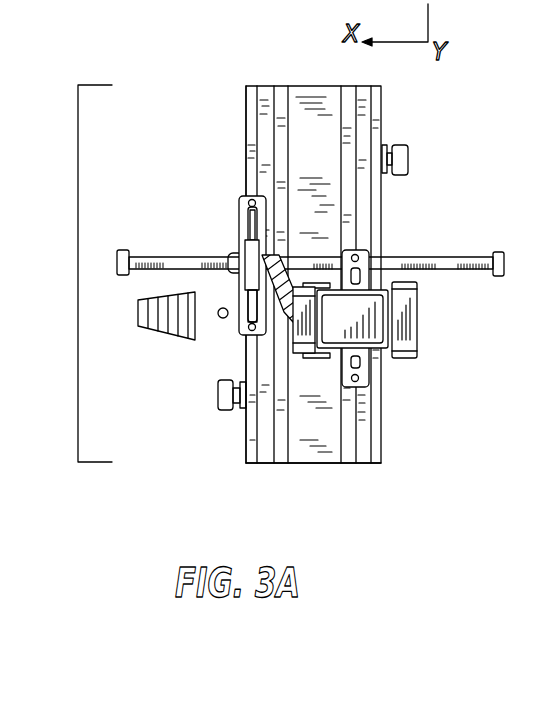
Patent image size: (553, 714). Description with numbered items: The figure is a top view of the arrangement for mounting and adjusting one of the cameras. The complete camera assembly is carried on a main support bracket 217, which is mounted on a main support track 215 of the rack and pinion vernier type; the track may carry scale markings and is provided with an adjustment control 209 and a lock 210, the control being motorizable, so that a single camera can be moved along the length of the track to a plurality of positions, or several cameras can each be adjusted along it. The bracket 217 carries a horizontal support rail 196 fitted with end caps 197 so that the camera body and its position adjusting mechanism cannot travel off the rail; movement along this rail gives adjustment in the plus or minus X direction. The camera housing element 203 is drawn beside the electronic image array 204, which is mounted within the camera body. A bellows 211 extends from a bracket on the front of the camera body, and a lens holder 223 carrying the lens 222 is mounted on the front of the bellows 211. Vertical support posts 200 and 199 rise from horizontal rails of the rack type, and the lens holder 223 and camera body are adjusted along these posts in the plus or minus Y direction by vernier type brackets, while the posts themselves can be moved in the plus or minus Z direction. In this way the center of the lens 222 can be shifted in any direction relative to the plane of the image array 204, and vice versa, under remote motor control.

The horizontal support rail 196 is at (462, 257).
The end caps 197 is at (133, 240).
The vertical support post 199 is at (348, 463).
The vertical support post 200 is at (247, 93).
The sensor housing box 203 is at (418, 291).
The electronic image array 204 is at (404, 327).
The adjustment control 209 is at (402, 140).
The lock 210 is at (217, 400).
The bellows 211 is at (287, 318).
The main support track 215 is at (317, 85).
The main support bracket 217 is at (240, 290).
The lens 222 is at (228, 256).
The lens holder 223 is at (252, 242).